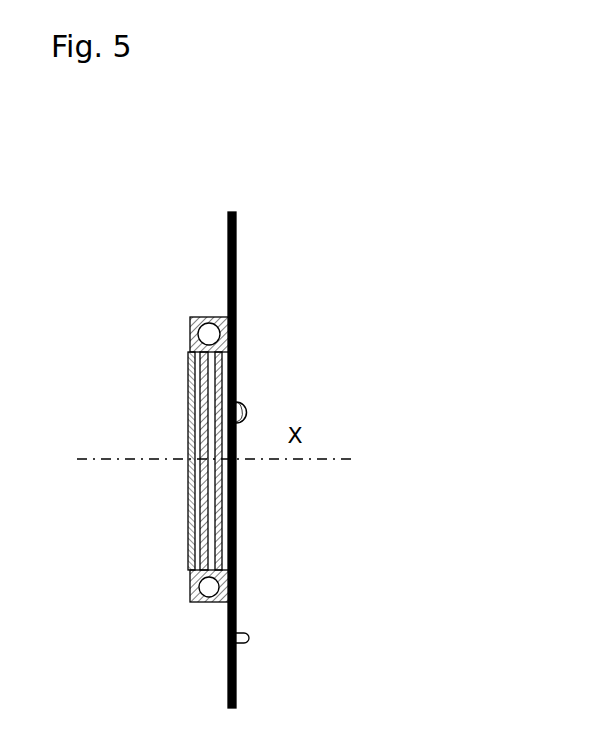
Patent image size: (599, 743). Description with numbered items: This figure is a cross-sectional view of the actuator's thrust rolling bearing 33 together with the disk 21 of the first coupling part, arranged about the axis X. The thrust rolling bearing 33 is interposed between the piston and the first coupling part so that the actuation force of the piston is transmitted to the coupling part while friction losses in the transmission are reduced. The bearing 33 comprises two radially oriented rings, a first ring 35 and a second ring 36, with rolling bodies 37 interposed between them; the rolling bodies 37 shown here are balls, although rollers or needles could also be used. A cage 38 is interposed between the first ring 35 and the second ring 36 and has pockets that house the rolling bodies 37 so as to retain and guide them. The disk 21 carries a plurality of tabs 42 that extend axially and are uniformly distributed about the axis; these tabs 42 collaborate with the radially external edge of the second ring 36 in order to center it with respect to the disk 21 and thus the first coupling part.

The disk 21 is at (233, 255).
The thrust rolling bearing 33 is at (235, 476).
The first ring 35 is at (224, 615).
The second ring 36 is at (232, 578).
The rolling bodies 37 is at (280, 646).
The cage 38 is at (208, 602).
The tabs 42 is at (235, 476).